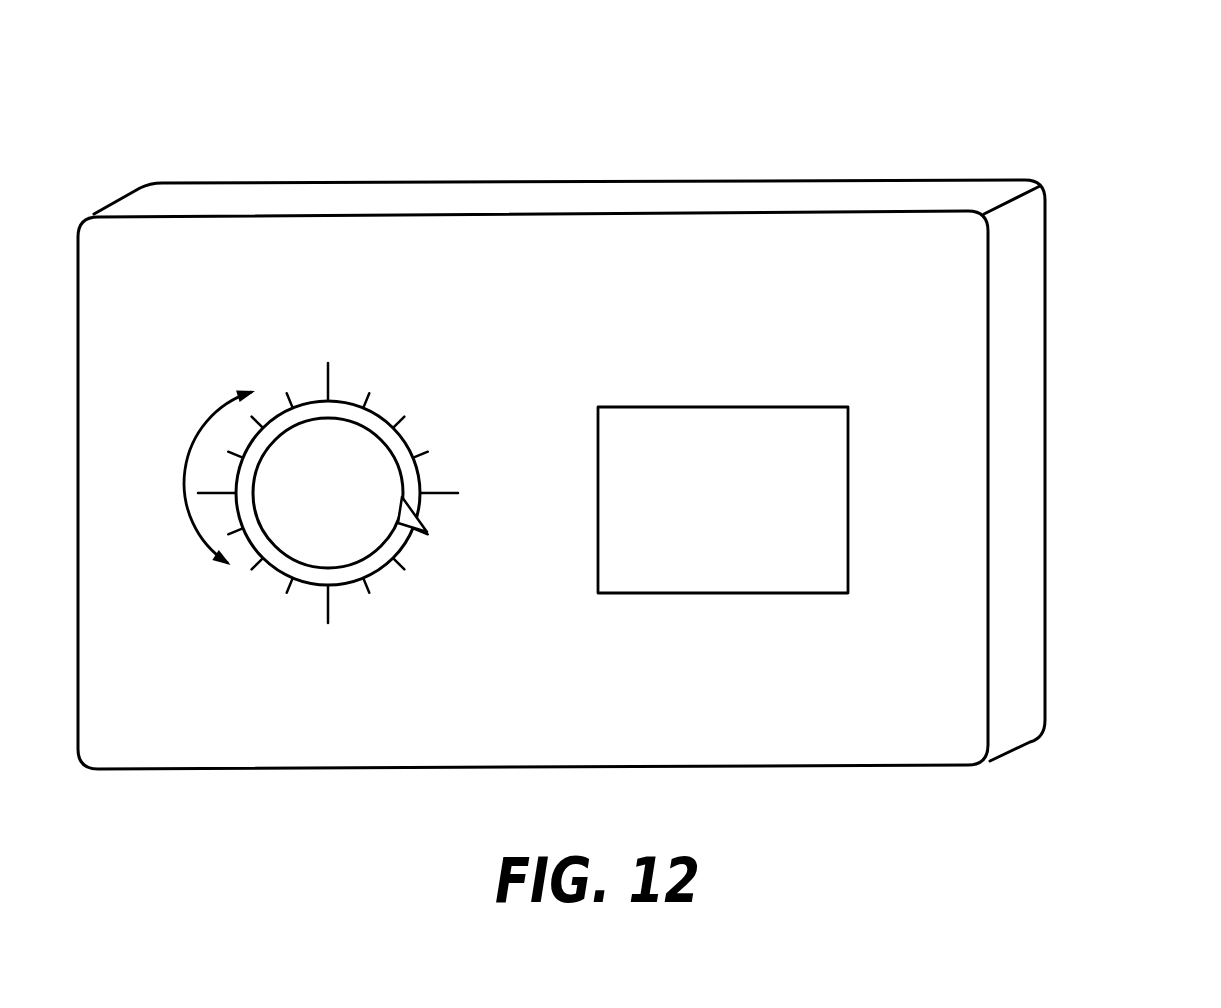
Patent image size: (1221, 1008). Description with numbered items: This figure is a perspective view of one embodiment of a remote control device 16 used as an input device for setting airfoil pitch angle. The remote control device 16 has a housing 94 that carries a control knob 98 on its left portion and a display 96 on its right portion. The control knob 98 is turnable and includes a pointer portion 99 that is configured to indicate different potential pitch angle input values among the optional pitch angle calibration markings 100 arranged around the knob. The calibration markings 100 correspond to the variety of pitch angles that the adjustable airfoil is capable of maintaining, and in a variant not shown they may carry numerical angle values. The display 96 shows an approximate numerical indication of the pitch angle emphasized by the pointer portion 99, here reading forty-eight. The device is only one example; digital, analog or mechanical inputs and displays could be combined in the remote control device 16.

The remote control device 16 is at (705, 115).
The housing 94 is at (1045, 282).
The display 96 is at (731, 406).
The control knob 98 is at (350, 398).
The pointer portion 99 is at (420, 537).
The pitch angle calibration markings 100 is at (195, 433).